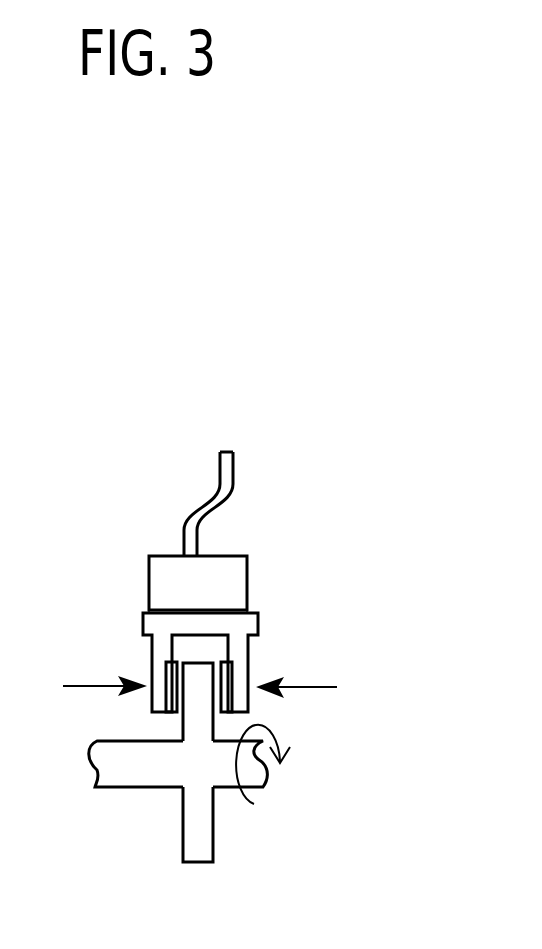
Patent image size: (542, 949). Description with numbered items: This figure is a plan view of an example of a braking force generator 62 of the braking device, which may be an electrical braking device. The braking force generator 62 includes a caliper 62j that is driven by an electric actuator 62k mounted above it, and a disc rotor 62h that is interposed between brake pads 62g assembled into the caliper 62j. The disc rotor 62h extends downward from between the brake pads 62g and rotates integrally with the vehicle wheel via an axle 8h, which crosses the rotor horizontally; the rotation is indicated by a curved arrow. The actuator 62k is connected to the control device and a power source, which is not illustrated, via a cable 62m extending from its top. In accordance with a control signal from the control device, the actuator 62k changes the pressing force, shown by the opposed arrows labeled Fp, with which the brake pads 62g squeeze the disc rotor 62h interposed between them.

The braking force generator 62 is at (232, 925).
The cable 62m is at (227, 483).
The electric actuator 62k is at (157, 582).
The caliper 62j is at (158, 660).
The brake pads 62g is at (228, 670).
The disc rotor 62h is at (203, 837).
The axle 8h is at (130, 775).